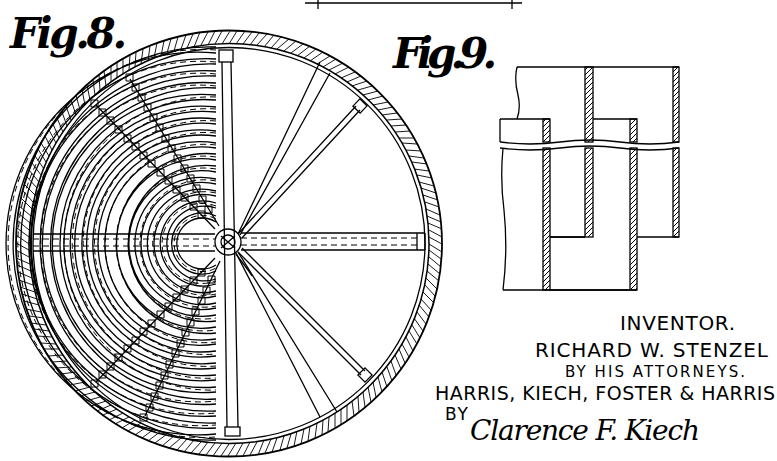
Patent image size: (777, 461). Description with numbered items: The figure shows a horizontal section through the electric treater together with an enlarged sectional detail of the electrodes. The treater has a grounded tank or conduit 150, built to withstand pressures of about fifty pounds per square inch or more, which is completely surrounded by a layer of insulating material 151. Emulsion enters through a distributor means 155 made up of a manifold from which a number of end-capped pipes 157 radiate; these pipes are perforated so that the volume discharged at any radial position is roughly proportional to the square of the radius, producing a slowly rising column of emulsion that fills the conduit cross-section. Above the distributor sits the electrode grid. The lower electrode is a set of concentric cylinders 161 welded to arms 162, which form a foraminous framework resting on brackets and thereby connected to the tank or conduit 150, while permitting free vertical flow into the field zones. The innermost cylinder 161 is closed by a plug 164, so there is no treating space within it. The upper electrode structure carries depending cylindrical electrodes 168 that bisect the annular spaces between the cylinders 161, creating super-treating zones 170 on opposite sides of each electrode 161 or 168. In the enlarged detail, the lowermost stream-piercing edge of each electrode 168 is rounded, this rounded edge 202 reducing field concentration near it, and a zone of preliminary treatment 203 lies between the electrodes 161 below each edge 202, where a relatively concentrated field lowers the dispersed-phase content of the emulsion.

In FIG. 8, the tank or conduit 150 is at (423, 153).
In FIG. 8, the layer of insulating material 151 is at (432, 192).
In FIG. 8, the distributor means 155 is at (257, 278).
In FIG. 8, the end-capped pipes 157 is at (322, 152).
In FIG. 8, the concentric cylinders 161 is at (231, 81).
In FIG. 9, the concentric cylinders 161 is at (638, 257).
In FIG. 8, the arms 162 is at (278, 328).
In FIG. 8, the plug 164 is at (245, 252).
In FIG. 8, the depending cylindrical electrodes 168 is at (233, 63).
In FIG. 9, the depending cylindrical electrodes 168 is at (593, 95).
In FIG. 9, the super-treating zones 170 is at (658, 170).
In FIG. 9, the rounded edge 202 is at (592, 237).
In FIG. 9, the zone of preliminary treatment 203 is at (612, 269).